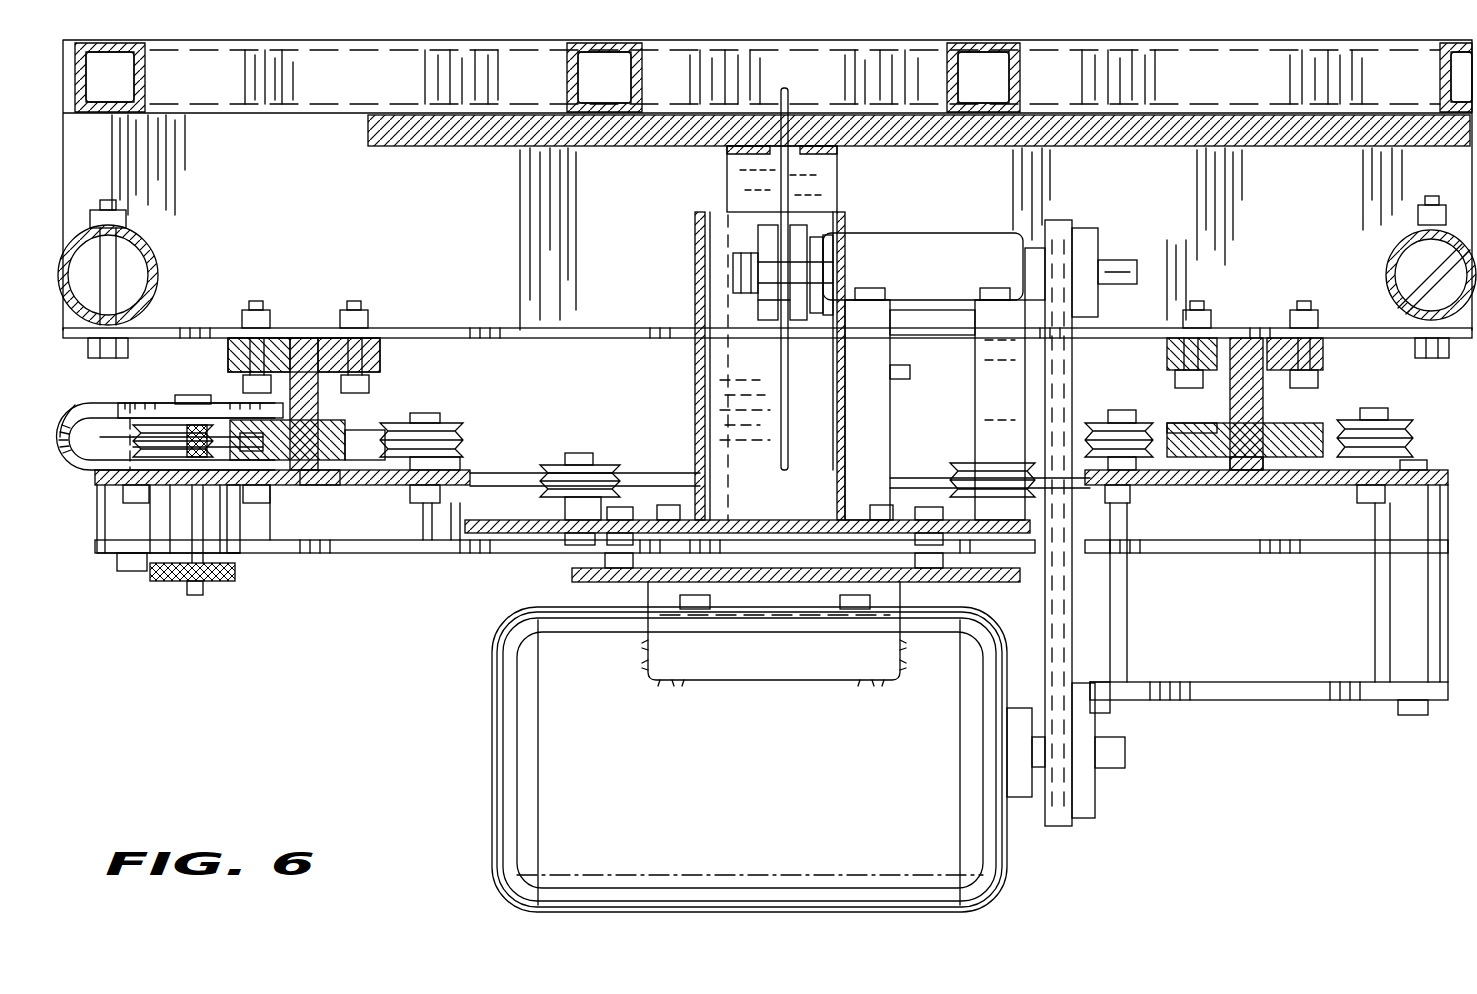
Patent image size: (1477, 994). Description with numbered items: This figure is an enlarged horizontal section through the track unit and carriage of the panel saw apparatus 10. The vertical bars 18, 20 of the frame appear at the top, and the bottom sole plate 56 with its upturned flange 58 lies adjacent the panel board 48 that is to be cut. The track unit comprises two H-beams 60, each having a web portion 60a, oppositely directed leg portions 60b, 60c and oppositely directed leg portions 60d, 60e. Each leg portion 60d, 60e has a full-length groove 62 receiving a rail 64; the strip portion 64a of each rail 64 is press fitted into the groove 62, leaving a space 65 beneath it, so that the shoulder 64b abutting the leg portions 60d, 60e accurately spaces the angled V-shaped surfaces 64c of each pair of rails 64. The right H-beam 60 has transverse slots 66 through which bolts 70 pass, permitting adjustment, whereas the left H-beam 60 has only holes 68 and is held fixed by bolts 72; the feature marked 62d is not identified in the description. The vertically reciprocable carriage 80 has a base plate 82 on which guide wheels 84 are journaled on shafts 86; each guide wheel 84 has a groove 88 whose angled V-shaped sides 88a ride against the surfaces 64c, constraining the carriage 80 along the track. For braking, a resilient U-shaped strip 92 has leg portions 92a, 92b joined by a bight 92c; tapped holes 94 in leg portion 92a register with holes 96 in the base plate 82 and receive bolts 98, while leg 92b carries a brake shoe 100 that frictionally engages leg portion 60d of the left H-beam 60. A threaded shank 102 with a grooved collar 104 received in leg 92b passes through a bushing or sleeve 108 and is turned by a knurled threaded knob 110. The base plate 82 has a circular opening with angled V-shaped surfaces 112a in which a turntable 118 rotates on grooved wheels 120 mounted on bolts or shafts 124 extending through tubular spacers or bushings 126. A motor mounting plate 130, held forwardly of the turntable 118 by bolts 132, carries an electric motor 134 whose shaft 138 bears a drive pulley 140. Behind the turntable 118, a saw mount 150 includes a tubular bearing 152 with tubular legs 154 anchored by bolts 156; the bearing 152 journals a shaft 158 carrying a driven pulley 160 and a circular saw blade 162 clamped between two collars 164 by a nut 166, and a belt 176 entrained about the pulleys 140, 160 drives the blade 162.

The panel saw apparatus 10 is at (425, 678).
The vertical bars 18 is at (145, 70).
The vertical bars 20 is at (645, 72).
The panel board 48 is at (500, 148).
The bottom sole plate 56 is at (315, 150).
The upturned flange 58 is at (575, 328).
The H-beams 60 is at (405, 358).
The web portion 60a is at (310, 395).
The leg portion 60b is at (235, 330).
The leg portion 60c is at (360, 340).
The leg portion 60d is at (232, 555).
The leg portion 60e is at (380, 400).
The groove 62 is at (320, 490).
The spacer member 62d is at (340, 462).
The rail 64 is at (383, 458).
The strip portion 64a is at (1195, 400).
The shoulder 64b is at (400, 425).
The angled V-shaped surfaces 64c is at (445, 432).
The space 65 is at (275, 505).
The transverse slots 66 is at (1240, 338).
The holes 68 is at (285, 300).
The bolts 70 is at (1300, 302).
The bolts 72 is at (258, 302).
The carriage 80 is at (392, 583).
The base plate 82 is at (1430, 470).
The guide wheels 84 is at (150, 410).
The shafts 86 is at (435, 505).
The groove 88 is at (1415, 440).
The angled V-shaped sides 88a is at (463, 440).
The resilient U-shaped strip 92 is at (75, 470).
The leg portion 92a is at (109, 437).
The leg portion 92b is at (160, 410).
The bight or connecting portion 92c is at (60, 437).
The tapped holes 94 is at (140, 405).
The holes 96 is at (120, 505).
The bolts 98 is at (125, 505).
The brake shoe 100 is at (280, 345).
The threaded shank 102 is at (195, 596).
The grooved collar 104 is at (205, 392).
The bushing or sleeve 108 is at (165, 582).
The knurled threaded knob 110 is at (215, 582).
The angled V-shaped surfaces 112a is at (505, 475).
The turntable 118 is at (520, 545).
The wheels 120 is at (618, 465).
The bolts or shafts 124 is at (583, 453).
The tubular spacers or bushings 126 is at (575, 505).
The motor mounting plate 130 is at (582, 582).
The bolts 132 is at (648, 600).
The electric motor 134 is at (492, 858).
The shaft 138 is at (1125, 752).
The drive pulley 140 is at (1095, 790).
The saw mount 150 is at (935, 225).
The tubular bearing 152 is at (865, 255).
The tubular legs 154 is at (978, 398).
The bolts 156 is at (1000, 290).
The shaft 158 is at (733, 272).
The driven pulley 160 is at (1085, 238).
The circular saw blade 162 is at (765, 165).
The collars 164 is at (785, 320).
The nut 166 is at (740, 288).
The belt 176 is at (1078, 628).